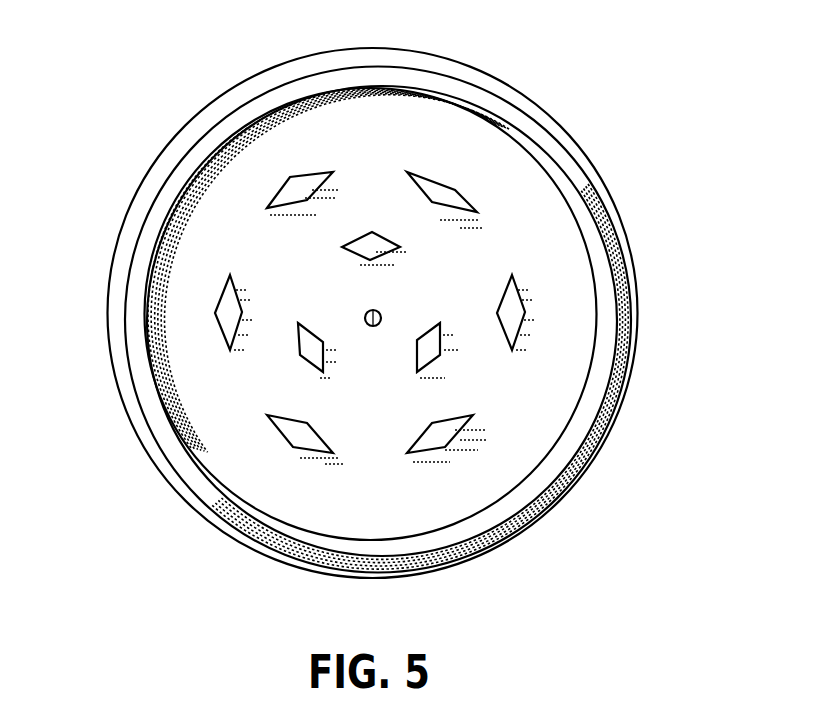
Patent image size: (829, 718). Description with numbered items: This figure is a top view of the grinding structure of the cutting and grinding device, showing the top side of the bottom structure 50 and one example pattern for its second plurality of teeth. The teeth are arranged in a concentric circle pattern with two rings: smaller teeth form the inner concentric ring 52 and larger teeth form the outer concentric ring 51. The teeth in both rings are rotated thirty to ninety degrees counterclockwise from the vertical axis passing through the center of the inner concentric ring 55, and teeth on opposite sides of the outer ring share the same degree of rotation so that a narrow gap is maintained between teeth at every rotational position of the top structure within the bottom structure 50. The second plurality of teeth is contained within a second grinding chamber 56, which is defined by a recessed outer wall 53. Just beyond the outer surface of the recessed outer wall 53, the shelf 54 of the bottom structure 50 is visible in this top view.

The bottom structure 50 is at (654, 270).
The outer concentric ring 51 is at (437, 192).
The inner concentric ring 52 is at (428, 345).
The recessed outer wall 53 is at (136, 340).
The shelf 54 is at (140, 405).
The center of the inner concentric ring 55 is at (373, 326).
The second grinding chamber 56 is at (230, 397).